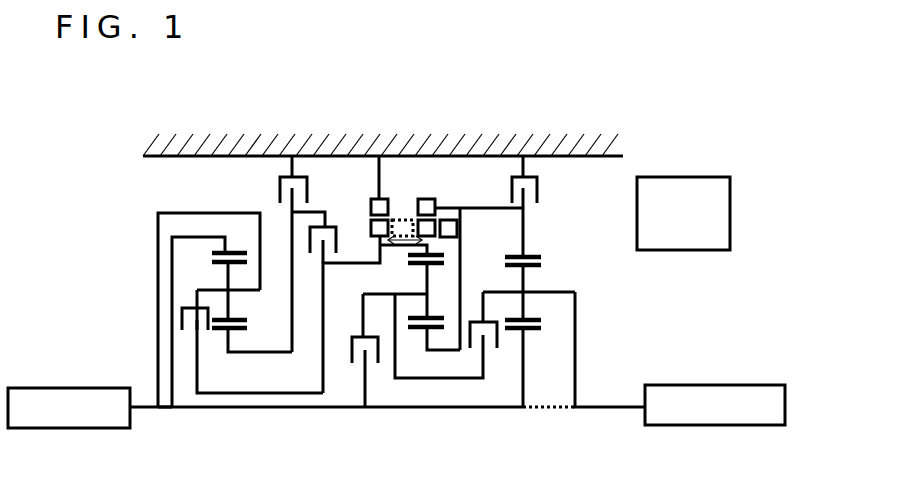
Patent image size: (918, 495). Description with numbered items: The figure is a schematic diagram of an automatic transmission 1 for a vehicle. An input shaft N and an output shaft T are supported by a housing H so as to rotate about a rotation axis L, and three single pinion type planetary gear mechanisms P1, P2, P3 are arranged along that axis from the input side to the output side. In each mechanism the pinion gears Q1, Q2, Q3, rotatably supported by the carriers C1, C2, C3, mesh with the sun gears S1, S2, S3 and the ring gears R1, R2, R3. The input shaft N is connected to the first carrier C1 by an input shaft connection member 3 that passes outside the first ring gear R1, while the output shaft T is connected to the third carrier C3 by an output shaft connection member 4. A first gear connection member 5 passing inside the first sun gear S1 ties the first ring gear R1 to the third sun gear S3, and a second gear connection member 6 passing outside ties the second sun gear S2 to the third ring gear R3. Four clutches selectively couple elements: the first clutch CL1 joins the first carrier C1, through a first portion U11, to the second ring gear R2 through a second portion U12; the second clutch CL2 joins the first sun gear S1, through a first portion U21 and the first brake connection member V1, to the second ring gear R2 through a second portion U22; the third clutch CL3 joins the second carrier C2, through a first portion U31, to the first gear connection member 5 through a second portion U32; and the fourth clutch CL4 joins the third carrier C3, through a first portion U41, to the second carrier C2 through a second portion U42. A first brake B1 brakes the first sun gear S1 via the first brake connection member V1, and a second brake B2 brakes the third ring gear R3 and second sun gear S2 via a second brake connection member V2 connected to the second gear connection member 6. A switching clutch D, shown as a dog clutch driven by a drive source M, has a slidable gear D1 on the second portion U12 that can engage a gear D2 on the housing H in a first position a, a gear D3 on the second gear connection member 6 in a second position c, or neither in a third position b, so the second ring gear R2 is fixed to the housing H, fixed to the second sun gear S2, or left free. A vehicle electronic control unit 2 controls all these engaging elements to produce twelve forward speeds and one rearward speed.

The automatic transmission 1 is at (530, 89).
The vehicle control ECU 2 is at (667, 177).
The input shaft connection member 3 is at (157, 267).
The output shaft connection member 4 is at (578, 380).
The first gear connection member 5 is at (200, 410).
The second gear connection member 6 is at (490, 208).
The housing H is at (293, 142).
The input shaft N is at (82, 428).
The output shaft T is at (685, 427).
The rotation axis L is at (165, 408).
The first planetary gear mechanism P1 is at (254, 362).
The second planetary gear mechanism P2 is at (438, 340).
The third planetary gear mechanism P3 is at (557, 335).
The first ring gear R1 is at (233, 252).
The second ring gear R2 is at (442, 256).
The third ring gear R3 is at (537, 253).
The first sun gear S1 is at (232, 340).
The second sun gear S2 is at (432, 332).
The third sun gear S3 is at (524, 333).
The first carrier C1 is at (217, 289).
The second carrier C2 is at (420, 293).
The third carrier C3 is at (533, 291).
The first pinion gear Q1 is at (232, 307).
The second pinion gear Q2 is at (422, 305).
The third pinion gear Q3 is at (526, 307).
The first clutch CL1 is at (210, 341).
The second clutch CL2 is at (356, 233).
The third clutch CL3 is at (348, 348).
The fourth clutch CL4 is at (503, 345).
The first brake B1 is at (313, 183).
The second brake B2 is at (547, 188).
The first brake connection member V1 is at (291, 230).
The second brake connection member V2 is at (526, 196).
The first portion of first-clutch connection member U11 is at (195, 297).
The second portion of first-clutch connection member U12 is at (195, 366).
The first portion of second-clutch connection member U21 is at (316, 216).
The second portion of second-clutch connection member U22 is at (320, 258).
The first portion of third-clutch connection member U31 is at (374, 294).
The second portion of third-clutch connection member U32 is at (367, 395).
The first portion of fourth-clutch connection member U41 is at (483, 295).
The second portion of fourth-clutch connection member U42 is at (432, 378).
The switching clutch D is at (409, 193).
The gear D1 is at (396, 218).
The gear D2 is at (377, 198).
The gear D3 is at (434, 198).
The drive source M is at (455, 218).
The first position a is at (368, 226).
The third position b is at (406, 217).
The second position c is at (428, 219).